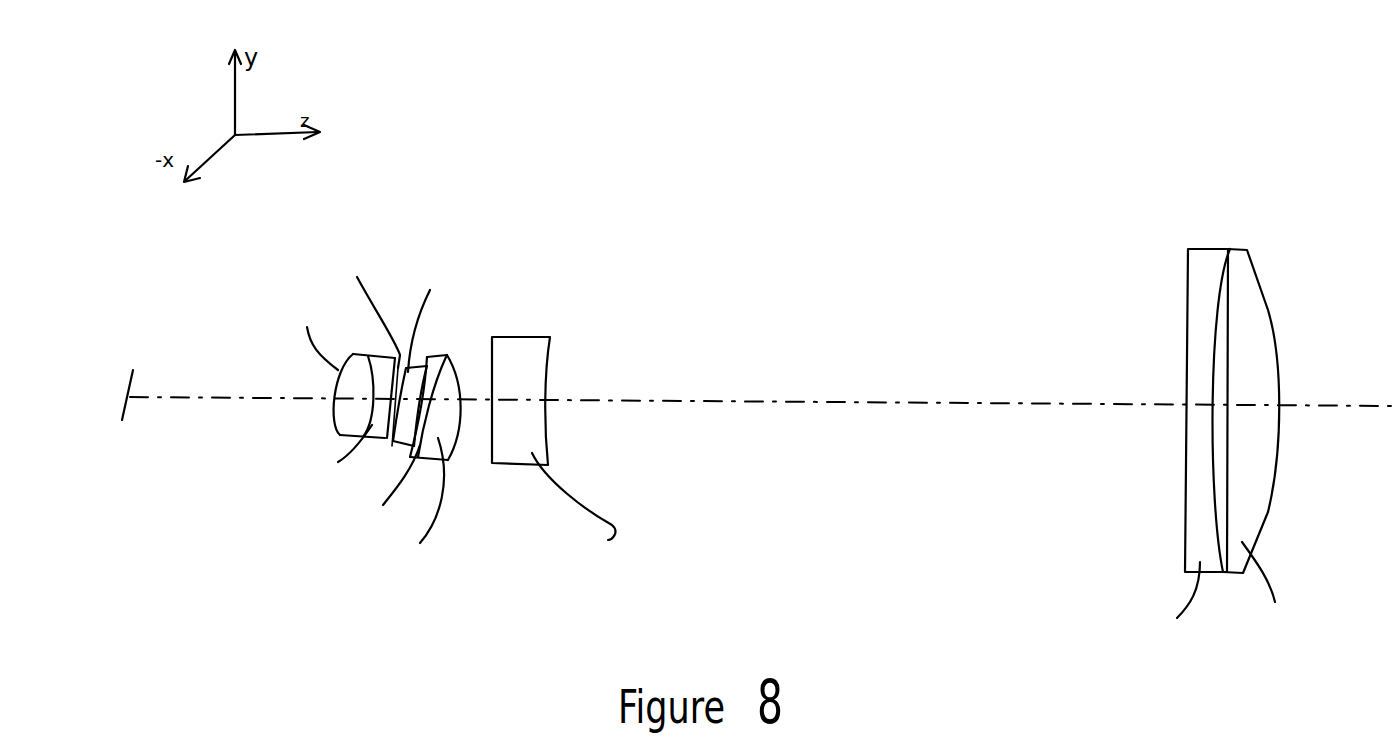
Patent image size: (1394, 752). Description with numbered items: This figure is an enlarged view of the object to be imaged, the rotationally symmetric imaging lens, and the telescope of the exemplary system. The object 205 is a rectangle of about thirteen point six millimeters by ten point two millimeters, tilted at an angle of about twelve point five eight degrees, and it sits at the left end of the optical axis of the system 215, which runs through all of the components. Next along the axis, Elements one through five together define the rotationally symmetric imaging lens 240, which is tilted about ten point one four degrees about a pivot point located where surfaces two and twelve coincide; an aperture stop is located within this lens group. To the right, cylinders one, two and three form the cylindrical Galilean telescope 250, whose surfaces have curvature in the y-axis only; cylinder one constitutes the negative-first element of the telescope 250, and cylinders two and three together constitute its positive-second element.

The object 205 is at (128, 382).
The optical axis of the system 215 is at (978, 404).
The rotationally symmetric imaging lens 240 is at (453, 625).
The cylindrical Galilean telescope 250 is at (906, 371).